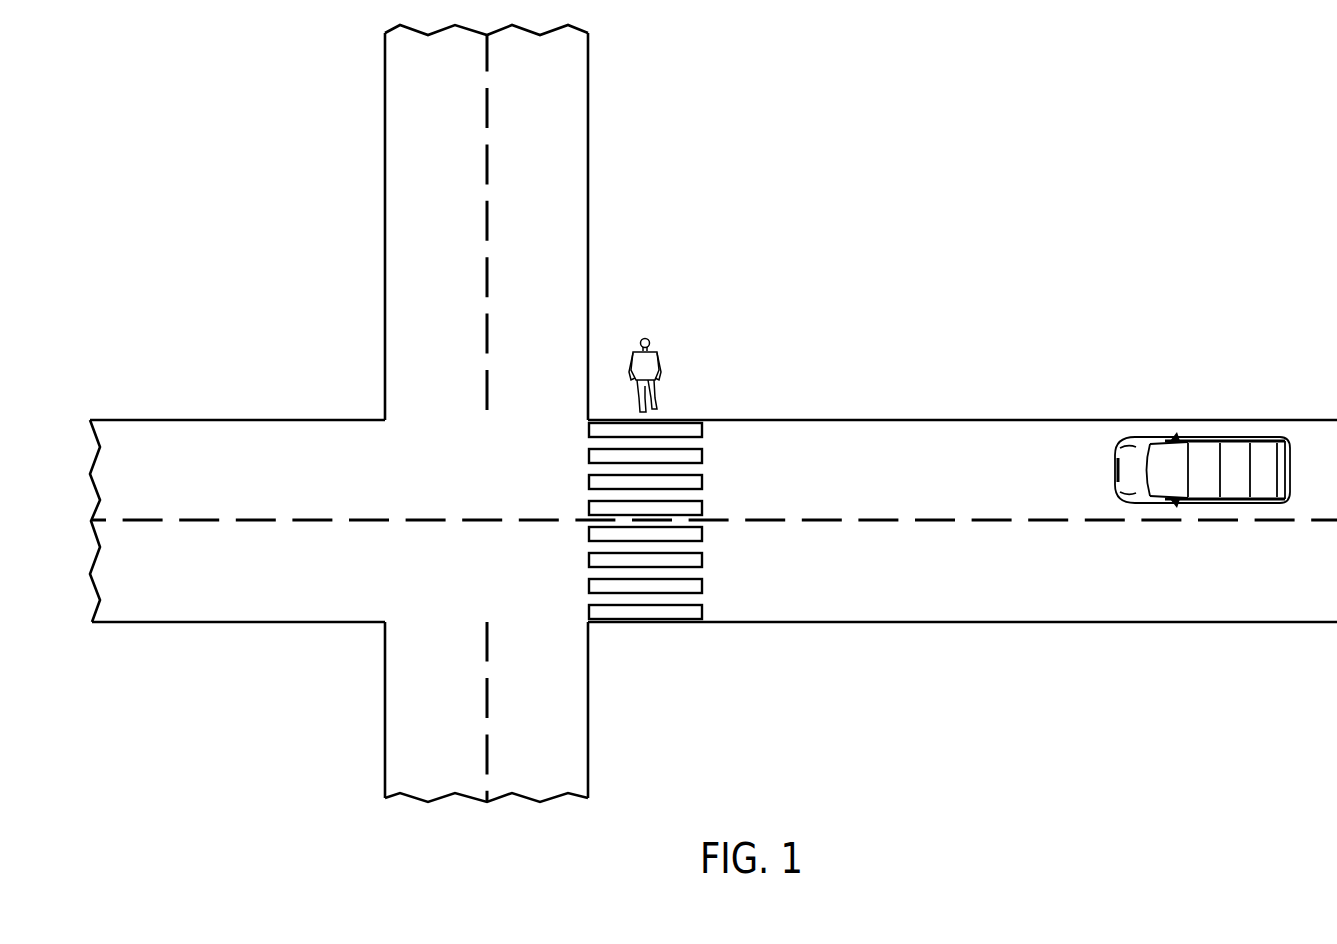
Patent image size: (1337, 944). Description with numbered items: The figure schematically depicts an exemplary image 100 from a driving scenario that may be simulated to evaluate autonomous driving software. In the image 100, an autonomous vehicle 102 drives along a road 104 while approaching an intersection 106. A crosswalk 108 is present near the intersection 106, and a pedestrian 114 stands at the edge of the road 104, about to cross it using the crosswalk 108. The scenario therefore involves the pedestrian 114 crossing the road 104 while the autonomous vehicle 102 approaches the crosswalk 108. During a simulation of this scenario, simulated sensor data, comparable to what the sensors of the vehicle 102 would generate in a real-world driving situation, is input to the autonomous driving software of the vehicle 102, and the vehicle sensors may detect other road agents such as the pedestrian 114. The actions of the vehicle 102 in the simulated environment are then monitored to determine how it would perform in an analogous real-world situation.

The image 100 is at (713, 413).
The autonomous vehicle 102 is at (1210, 432).
The road 104 is at (1211, 612).
The intersection 106 is at (443, 413).
The crosswalk 108 is at (645, 580).
The pedestrian 114 is at (645, 335).